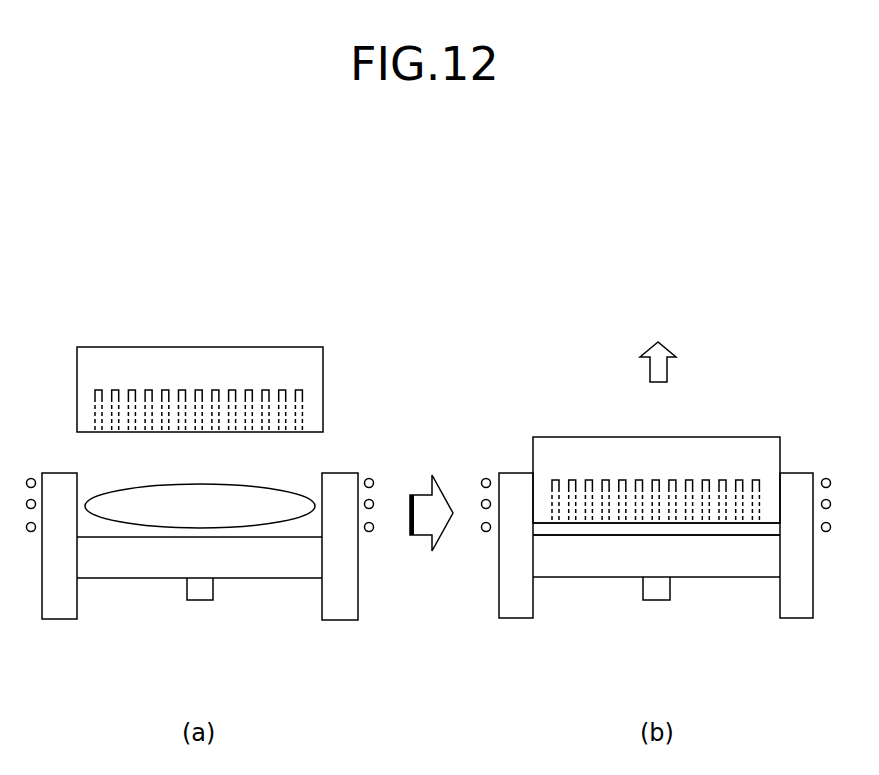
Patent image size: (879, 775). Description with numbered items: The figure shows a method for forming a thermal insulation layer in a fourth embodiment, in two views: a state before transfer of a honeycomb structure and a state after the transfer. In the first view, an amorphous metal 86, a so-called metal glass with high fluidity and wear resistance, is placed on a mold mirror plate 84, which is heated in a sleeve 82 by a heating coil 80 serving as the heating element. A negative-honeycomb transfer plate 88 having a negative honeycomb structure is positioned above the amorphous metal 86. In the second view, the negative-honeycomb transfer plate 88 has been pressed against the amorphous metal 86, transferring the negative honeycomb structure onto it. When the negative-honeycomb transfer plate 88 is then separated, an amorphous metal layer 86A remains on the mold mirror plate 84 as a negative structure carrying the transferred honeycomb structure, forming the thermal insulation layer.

The heating coil 80 is at (30, 532).
The sleeve 82 is at (60, 614).
The mold mirror plate 84 is at (293, 570).
The amorphous metal 86 is at (277, 497).
The amorphous metal layer 86A is at (765, 530).
The negative-honeycomb transfer plate 88 is at (313, 362).